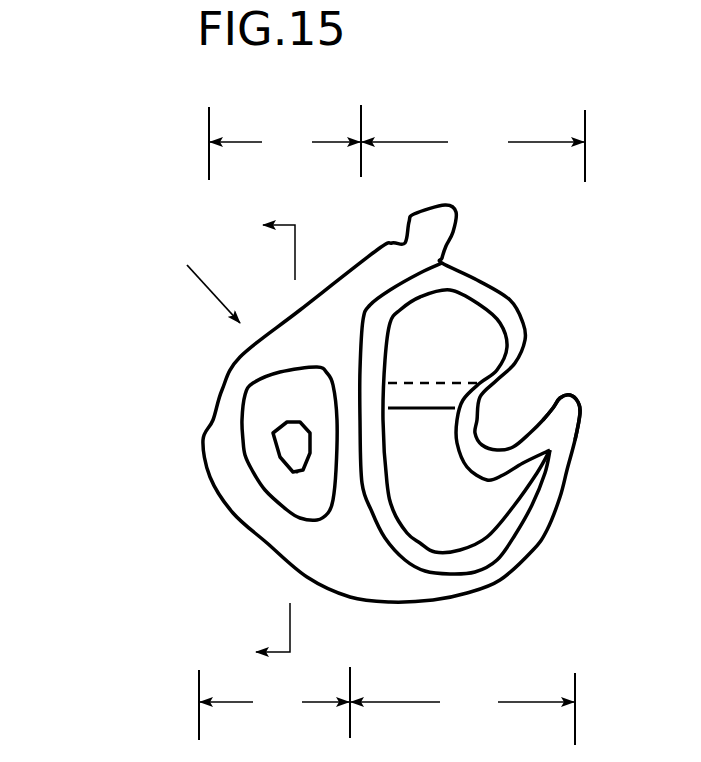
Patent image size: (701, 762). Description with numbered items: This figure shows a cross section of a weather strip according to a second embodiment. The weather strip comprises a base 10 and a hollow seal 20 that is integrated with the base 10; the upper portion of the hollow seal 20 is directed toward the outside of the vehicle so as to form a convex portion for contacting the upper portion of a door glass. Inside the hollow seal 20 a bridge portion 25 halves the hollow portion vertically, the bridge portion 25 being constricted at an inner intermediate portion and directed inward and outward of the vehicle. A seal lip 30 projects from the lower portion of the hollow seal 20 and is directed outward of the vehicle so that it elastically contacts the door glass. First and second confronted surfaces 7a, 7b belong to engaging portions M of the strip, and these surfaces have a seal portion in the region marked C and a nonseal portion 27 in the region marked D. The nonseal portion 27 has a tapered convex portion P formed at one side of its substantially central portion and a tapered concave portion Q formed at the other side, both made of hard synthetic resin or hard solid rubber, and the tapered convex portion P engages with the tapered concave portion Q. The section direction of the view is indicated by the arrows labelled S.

The base 10 is at (391, 396).
The hollow seal 20 is at (587, 278).
The bridge portion 25 is at (595, 362).
The nonseal portion 27 is at (227, 417).
The seal lip 30 is at (648, 447).
The first confronted surface 7a is at (304, 396).
The second confronted surface 7b is at (304, 396).
The tapered convex portion P is at (297, 473).
The tapered concave portion Q is at (262, 470).
The section line S is at (287, 422).
The engaging portion M is at (205, 279).
The region D- D is at (280, 422).
The region C- C is at (468, 427).